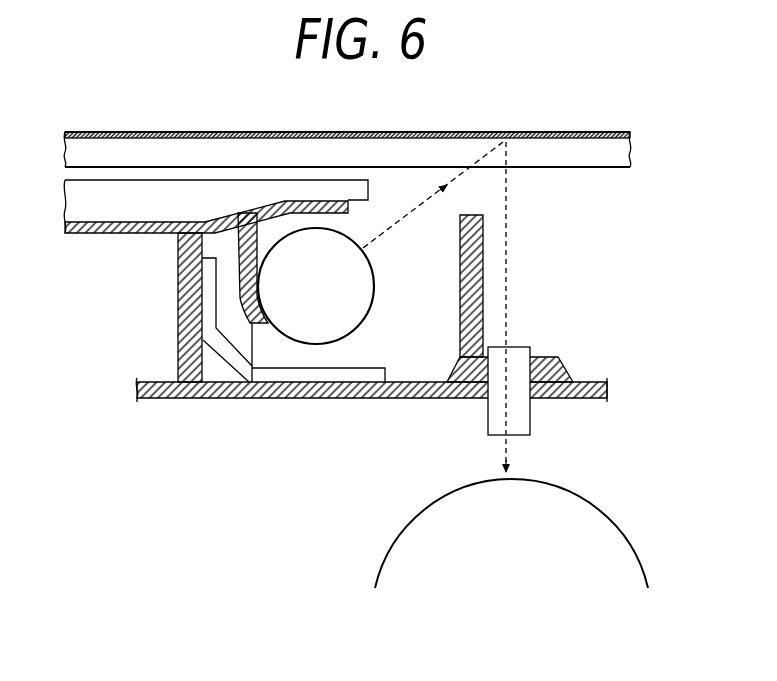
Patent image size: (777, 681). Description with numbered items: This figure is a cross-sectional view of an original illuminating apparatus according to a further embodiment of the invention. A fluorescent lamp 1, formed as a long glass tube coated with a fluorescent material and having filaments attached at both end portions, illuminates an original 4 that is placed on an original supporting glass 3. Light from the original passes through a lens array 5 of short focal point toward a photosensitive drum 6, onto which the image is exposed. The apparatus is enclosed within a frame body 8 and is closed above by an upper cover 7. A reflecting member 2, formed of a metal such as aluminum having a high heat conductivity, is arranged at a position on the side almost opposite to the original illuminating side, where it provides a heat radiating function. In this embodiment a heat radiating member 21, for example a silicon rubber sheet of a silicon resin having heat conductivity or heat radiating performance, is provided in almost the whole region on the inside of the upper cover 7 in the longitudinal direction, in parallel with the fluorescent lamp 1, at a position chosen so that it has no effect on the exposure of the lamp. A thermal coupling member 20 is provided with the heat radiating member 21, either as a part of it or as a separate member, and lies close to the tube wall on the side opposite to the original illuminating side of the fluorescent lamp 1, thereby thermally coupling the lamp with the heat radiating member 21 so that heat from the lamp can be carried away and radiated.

The fluorescent lamp 1 is at (345, 312).
The reflecting member 2 is at (288, 375).
The original supporting glass 3 is at (548, 157).
The original 4 is at (582, 132).
The lens array 5 is at (513, 357).
The photosensitive drum 6 is at (587, 498).
The upper cover 7 is at (68, 202).
The frame body 8 is at (150, 400).
The thermal coupling member 20 is at (253, 400).
The heat radiating member 21 is at (85, 233).